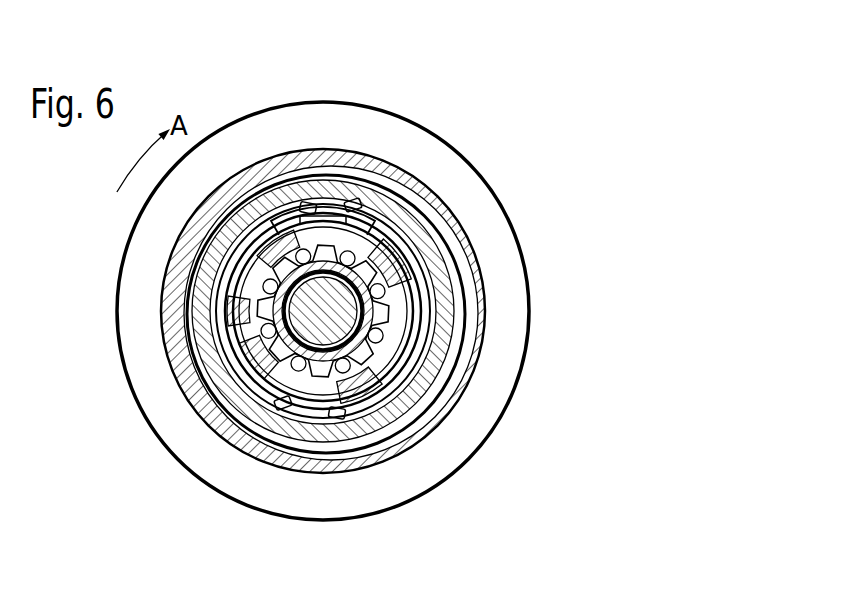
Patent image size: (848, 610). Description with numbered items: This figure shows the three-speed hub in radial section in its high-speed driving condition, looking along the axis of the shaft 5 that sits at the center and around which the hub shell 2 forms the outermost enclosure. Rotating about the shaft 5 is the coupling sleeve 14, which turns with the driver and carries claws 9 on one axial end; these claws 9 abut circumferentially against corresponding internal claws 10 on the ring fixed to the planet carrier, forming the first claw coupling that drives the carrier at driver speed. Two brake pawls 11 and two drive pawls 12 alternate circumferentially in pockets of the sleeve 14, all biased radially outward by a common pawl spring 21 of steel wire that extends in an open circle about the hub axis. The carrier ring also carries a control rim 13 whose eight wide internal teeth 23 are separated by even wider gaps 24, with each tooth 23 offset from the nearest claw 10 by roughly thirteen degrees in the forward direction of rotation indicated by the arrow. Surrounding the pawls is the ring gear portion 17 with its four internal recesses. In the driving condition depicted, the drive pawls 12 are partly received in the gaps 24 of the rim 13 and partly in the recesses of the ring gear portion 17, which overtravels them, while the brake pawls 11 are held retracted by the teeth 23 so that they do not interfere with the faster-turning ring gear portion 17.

The hub shell 2 is at (462, 383).
The shaft 5 is at (322, 368).
The claws 9 is at (262, 270).
The internal claws 10 is at (250, 306).
The brake pawls 11 is at (355, 206).
The drive pawls 12 is at (308, 208).
The control rim 13 is at (447, 422).
The coupling sleeve 14 is at (407, 311).
The ring gear portion 17 is at (437, 240).
The pawl spring 21 is at (350, 220).
The internal teeth 23 is at (420, 340).
The gaps 24 is at (397, 218).